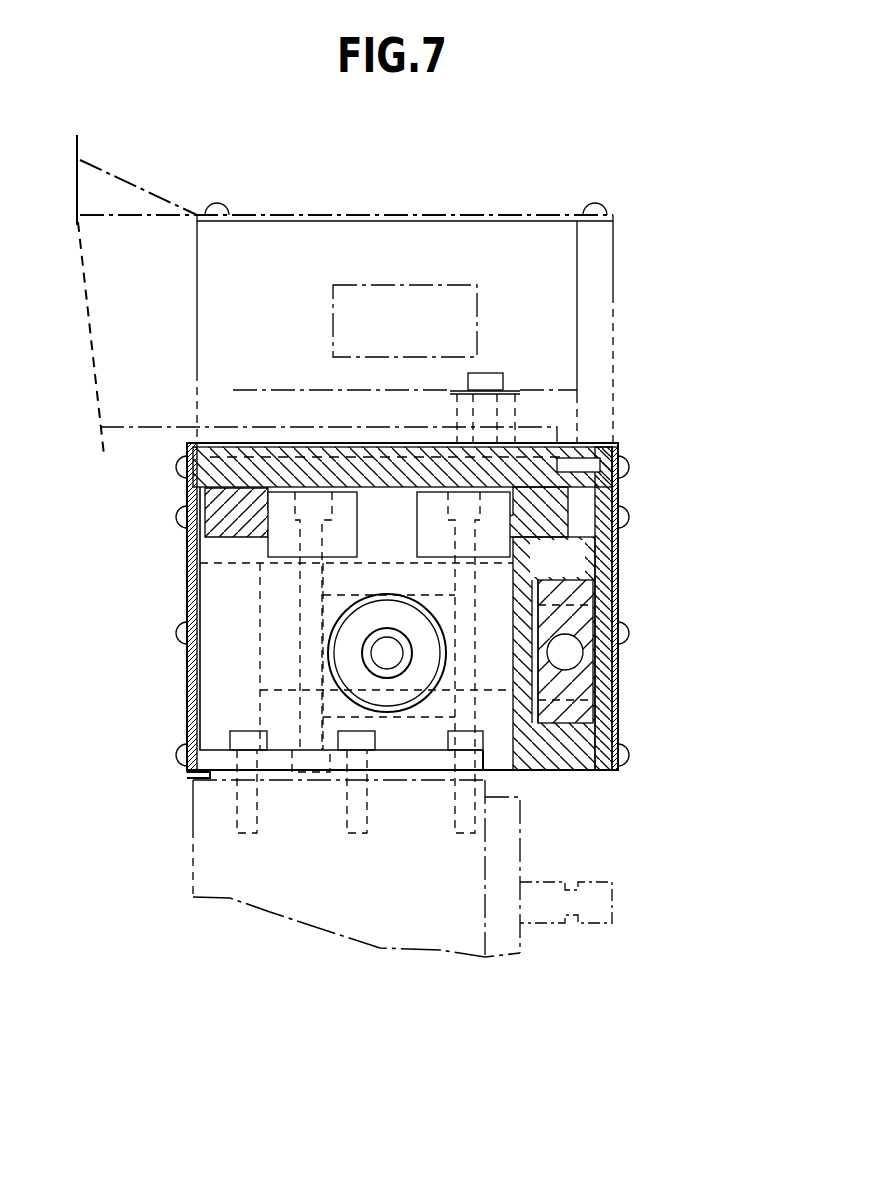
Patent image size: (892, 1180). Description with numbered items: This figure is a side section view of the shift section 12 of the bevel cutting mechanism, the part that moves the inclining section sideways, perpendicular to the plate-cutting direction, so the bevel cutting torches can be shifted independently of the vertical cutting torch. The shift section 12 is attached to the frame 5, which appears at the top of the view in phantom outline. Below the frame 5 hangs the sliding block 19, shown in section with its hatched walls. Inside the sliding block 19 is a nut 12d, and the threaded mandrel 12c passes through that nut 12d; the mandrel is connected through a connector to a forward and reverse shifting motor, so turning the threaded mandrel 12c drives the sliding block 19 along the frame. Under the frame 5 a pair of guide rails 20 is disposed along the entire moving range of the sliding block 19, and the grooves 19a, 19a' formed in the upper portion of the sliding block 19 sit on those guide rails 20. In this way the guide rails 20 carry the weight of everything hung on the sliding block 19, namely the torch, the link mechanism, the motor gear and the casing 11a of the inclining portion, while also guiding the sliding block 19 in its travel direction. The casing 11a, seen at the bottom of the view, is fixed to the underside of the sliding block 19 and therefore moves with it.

The frame 5 is at (537, 245).
The sliding block 19 is at (222, 718).
The groove 19a is at (218, 453).
The groove 19a' is at (600, 453).
The guide rail 20 is at (222, 548).
The shift section 12 is at (226, 690).
The threaded mandrel 12c is at (385, 650).
The nut 12d is at (418, 690).
The casing 11a is at (340, 926).